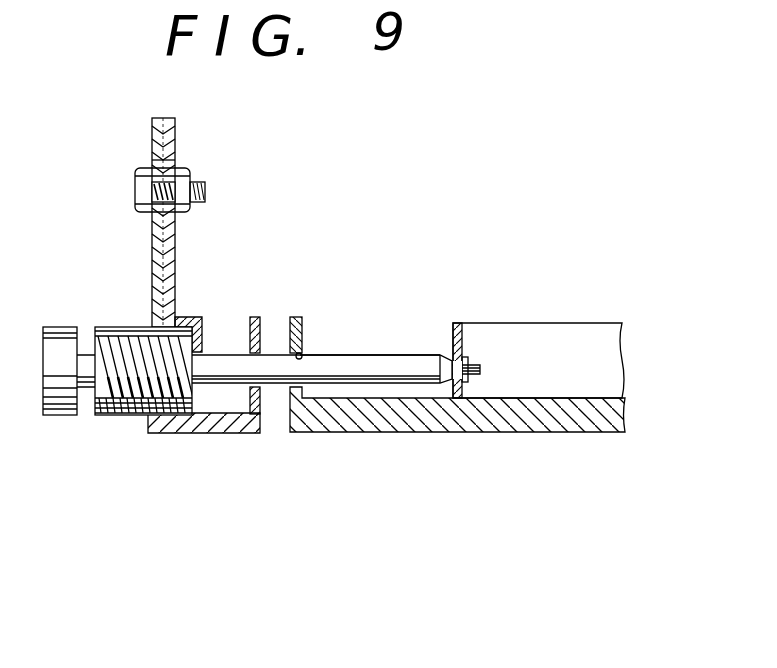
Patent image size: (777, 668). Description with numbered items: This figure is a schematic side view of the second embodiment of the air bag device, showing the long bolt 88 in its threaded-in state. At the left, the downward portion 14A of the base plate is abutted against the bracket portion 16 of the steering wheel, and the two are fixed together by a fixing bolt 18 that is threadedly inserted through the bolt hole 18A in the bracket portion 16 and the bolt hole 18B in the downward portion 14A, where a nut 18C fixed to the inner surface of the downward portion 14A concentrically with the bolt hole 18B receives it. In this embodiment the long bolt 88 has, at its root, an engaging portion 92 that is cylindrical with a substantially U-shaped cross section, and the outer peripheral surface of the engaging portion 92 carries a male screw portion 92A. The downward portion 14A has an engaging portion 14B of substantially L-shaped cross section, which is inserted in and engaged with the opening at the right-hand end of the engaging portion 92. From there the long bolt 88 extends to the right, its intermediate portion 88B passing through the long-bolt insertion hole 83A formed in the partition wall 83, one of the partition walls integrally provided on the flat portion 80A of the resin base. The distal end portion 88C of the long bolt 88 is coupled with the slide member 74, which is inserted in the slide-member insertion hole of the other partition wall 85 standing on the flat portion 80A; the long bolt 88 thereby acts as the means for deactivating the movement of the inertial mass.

The downward portion 14A is at (175, 267).
The engaging portion 14B is at (163, 340).
The bracket portion 16 is at (146, 244).
The fixing bolt 18 is at (133, 188).
The bolt hole 18A is at (153, 160).
The bolt hole 18B is at (173, 178).
The nut 18C is at (185, 215).
The slide member 74 is at (570, 312).
The flat portion 80A is at (535, 418).
The partition wall 83 is at (297, 317).
The long-bolt insertion hole 83A is at (308, 352).
The partition wall 85 is at (463, 340).
The long bolt 88 is at (425, 343).
The intermediate portion 88B is at (383, 353).
The distal end portion 88C is at (480, 368).
The engaging portion 92 is at (108, 318).
The male screw portion 92A is at (117, 415).